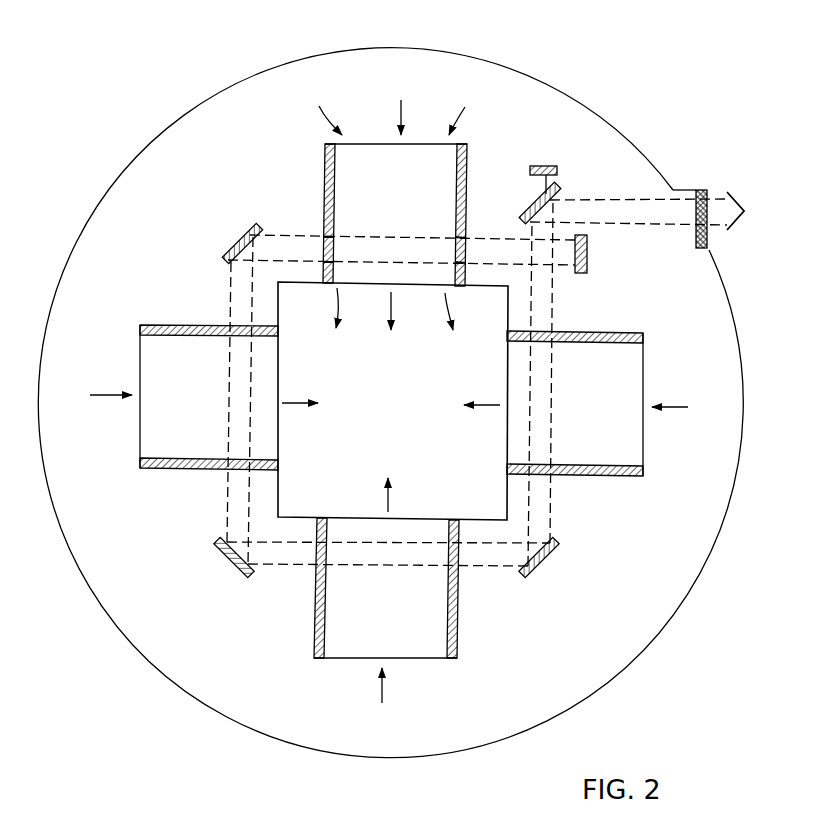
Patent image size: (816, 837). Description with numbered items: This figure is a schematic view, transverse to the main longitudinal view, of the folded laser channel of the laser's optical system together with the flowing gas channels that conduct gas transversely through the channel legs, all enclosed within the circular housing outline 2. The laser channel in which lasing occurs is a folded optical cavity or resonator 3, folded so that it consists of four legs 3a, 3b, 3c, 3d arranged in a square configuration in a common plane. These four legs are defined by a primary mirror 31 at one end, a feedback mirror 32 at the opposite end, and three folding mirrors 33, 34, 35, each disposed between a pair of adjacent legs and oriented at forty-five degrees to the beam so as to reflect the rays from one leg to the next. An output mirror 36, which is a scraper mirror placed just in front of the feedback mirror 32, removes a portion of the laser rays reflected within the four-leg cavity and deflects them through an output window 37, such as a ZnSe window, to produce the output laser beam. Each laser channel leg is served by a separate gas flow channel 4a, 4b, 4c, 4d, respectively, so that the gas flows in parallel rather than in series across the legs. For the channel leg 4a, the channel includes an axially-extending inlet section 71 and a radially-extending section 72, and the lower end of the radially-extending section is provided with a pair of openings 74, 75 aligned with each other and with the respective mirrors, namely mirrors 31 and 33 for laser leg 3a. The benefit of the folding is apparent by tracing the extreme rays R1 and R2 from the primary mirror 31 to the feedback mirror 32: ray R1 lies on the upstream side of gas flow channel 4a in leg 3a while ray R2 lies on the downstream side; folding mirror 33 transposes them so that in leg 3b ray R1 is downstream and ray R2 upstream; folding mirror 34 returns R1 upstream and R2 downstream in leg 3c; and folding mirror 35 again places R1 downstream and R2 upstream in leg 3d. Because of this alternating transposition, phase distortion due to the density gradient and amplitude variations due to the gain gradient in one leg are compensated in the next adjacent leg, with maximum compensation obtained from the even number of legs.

The housing 2 is at (386, 46).
The folded optical cavity or resonator 3 is at (270, 190).
The first laser channel leg 3a is at (293, 240).
The second laser channel leg 3b is at (229, 501).
The third laser channel leg 3c is at (491, 567).
The fourth laser channel leg 3d is at (548, 300).
The gas flow channel 4a is at (326, 160).
The gas flow channel 4b is at (143, 373).
The gas flow channel 4c is at (415, 655).
The gas flow channel 4d is at (636, 439).
The primary mirror 31 is at (587, 252).
The feedback mirror 32 is at (551, 164).
The first folding mirror 33 is at (231, 255).
The second folding mirror 34 is at (229, 568).
The third folding mirror 35 is at (555, 554).
The output mirror 36 is at (526, 209).
The output window 37 is at (709, 232).
The axially-extending inlet section 71 is at (419, 163).
The radially-extending section 72 is at (411, 120).
The opening 74 is at (334, 250).
The opening 75 is at (455, 255).
The extreme ray R1 is at (470, 240).
The extreme ray R2 is at (621, 200).